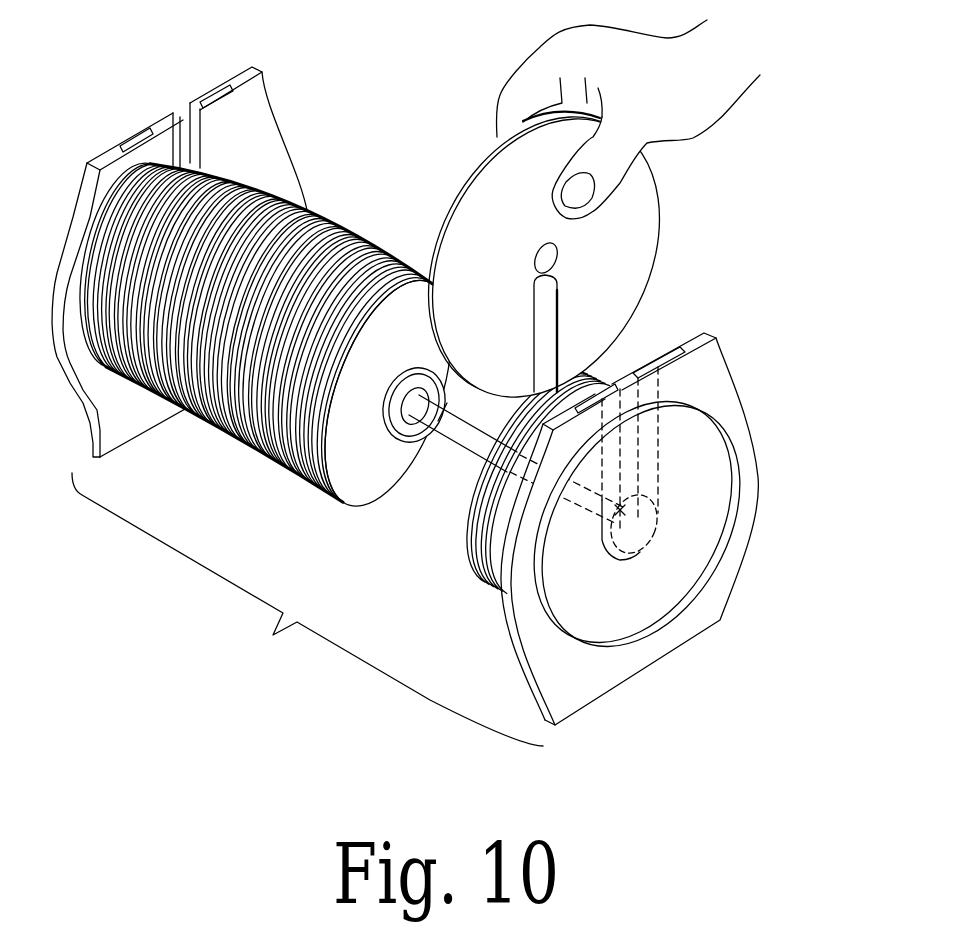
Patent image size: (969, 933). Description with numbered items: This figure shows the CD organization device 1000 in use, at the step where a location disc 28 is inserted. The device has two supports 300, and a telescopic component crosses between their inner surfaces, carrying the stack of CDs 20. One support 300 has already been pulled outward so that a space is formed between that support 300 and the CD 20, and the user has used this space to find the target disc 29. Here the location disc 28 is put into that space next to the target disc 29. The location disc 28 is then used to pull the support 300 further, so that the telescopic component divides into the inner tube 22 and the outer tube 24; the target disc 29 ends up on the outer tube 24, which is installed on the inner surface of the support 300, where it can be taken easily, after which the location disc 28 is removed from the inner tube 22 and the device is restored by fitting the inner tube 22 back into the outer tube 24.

The support 300 is at (263, 108).
The CD 20 is at (343, 245).
The location disc 28 is at (648, 226).
The target disc 29 is at (360, 507).
The outer tube 24 is at (420, 412).
The inner tube 22 is at (470, 432).
The CD organization device 1000 is at (307, 609).